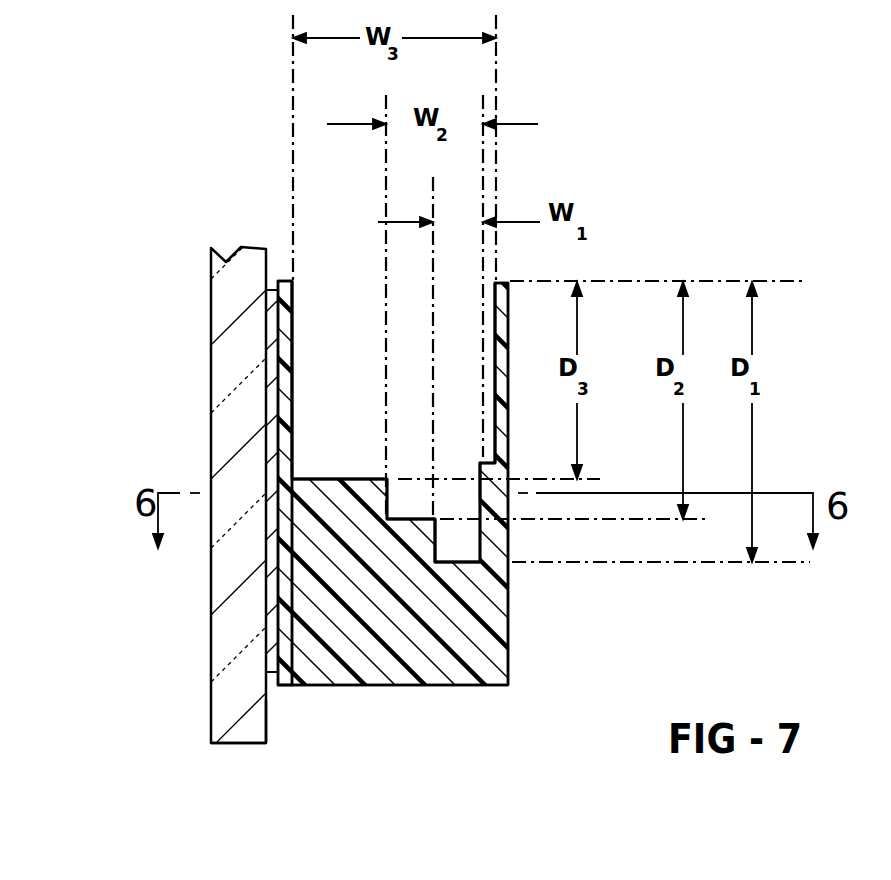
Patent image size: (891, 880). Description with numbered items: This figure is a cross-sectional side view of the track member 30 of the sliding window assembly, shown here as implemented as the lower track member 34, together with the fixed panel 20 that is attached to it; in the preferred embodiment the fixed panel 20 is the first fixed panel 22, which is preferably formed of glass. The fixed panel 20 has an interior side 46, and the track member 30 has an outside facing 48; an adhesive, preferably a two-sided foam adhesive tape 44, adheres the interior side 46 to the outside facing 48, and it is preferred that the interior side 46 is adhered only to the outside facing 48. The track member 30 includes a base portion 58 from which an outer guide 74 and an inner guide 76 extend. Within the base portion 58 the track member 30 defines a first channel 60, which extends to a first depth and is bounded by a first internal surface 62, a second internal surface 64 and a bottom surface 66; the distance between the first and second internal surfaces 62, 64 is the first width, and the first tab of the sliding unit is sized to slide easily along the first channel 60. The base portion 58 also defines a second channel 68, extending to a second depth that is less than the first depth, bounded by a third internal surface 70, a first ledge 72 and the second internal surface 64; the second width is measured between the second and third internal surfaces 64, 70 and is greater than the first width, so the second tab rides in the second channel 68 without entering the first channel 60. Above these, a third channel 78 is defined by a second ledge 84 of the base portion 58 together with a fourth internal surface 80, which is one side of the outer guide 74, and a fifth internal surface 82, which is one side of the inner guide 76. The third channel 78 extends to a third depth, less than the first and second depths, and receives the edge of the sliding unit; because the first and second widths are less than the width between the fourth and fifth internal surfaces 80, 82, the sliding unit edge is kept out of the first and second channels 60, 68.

The fixed panel 20 is at (209, 740).
The first fixed panel 22 is at (237, 745).
The track member 30 is at (469, 712).
The lower track member 34 is at (405, 687).
The adhesive tape 44 is at (271, 289).
The interior side 46 is at (268, 729).
The outside facing 48 is at (271, 676).
The base portion 58 is at (315, 478).
The first channel 60 is at (465, 559).
The first internal surface 62 is at (434, 478).
The second internal surface 64 is at (472, 478).
The bottom surface 66 is at (440, 558).
The second channel 68 is at (401, 511).
The third internal surface 70 is at (386, 478).
The first ledge 72 is at (395, 492).
The outer guide 74 is at (285, 280).
The inner guide 76 is at (502, 283).
The third channel 78 is at (410, 352).
The fourth internal surface 80 is at (294, 329).
The fifth internal surface 82 is at (493, 340).
The second ledge 84 is at (344, 478).